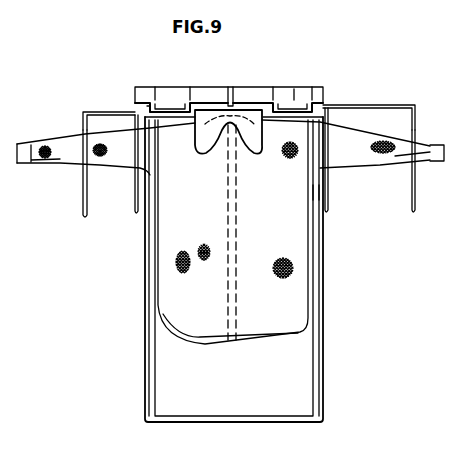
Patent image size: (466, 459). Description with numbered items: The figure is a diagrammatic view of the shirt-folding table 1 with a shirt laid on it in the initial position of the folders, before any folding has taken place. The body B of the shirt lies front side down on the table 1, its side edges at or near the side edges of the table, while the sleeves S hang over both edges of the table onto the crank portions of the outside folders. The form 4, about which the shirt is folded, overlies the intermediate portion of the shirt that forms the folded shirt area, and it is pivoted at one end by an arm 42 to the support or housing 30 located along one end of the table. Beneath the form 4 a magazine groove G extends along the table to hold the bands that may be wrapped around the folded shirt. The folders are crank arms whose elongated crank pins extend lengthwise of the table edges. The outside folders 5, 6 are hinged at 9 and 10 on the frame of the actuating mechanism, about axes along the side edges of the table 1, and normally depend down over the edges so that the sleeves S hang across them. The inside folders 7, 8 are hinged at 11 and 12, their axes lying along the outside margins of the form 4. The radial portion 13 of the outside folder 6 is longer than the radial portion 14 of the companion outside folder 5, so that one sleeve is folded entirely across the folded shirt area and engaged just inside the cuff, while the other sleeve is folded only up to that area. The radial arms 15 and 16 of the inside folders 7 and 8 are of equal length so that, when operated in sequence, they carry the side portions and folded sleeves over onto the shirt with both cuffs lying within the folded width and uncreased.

The table 1 is at (312, 335).
The body of the shirt B is at (291, 222).
The sleeves S is at (380, 163).
The magazine groove G is at (313, 195).
The form 4 is at (253, 148).
The outside folder 5 is at (82, 195).
The outside folder 6 is at (416, 178).
The inside folder 7 is at (135, 193).
The inside folder 8 is at (329, 178).
The pivot of outside folder 9 is at (147, 108).
The pivot of outside folder 10 is at (323, 87).
The pivot of inside folder 11 is at (192, 90).
The pivot of inside folder 12 is at (272, 90).
The radial portion of crank arm 13 is at (361, 105).
The radial portion of crank arm 14 is at (98, 112).
The radial arm of inside folder 15 is at (160, 103).
The radial arm of inside folder 16 is at (294, 89).
The support or housing 30 is at (166, 88).
The arm 42 is at (229, 90).